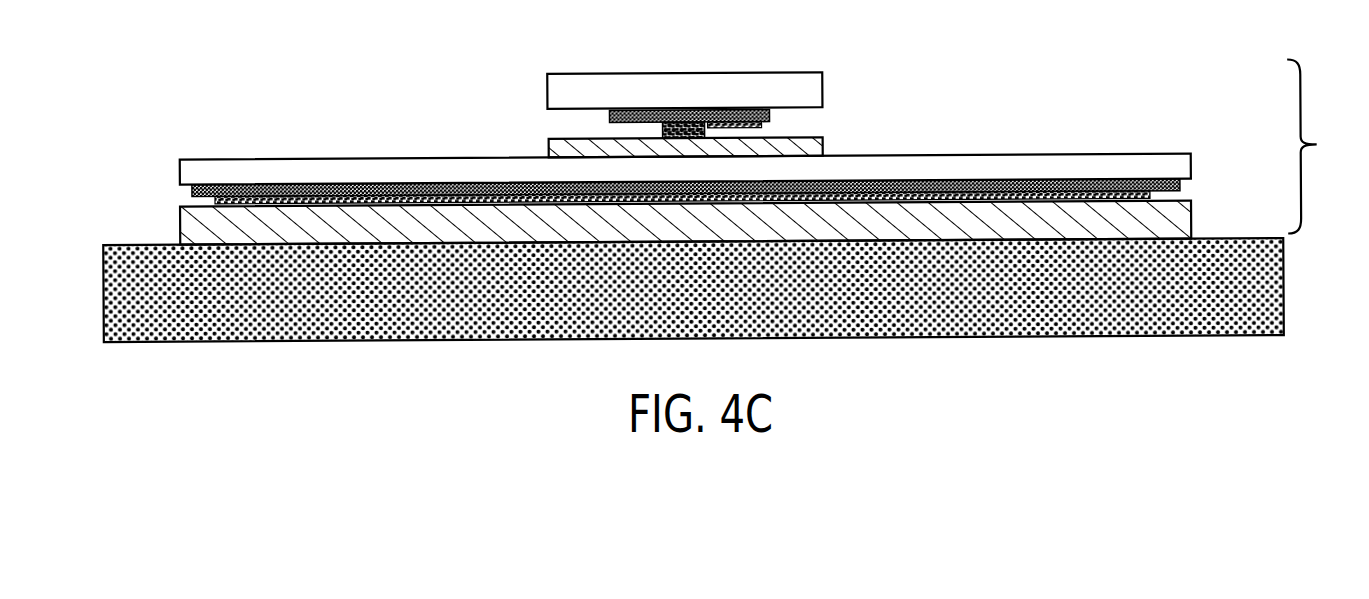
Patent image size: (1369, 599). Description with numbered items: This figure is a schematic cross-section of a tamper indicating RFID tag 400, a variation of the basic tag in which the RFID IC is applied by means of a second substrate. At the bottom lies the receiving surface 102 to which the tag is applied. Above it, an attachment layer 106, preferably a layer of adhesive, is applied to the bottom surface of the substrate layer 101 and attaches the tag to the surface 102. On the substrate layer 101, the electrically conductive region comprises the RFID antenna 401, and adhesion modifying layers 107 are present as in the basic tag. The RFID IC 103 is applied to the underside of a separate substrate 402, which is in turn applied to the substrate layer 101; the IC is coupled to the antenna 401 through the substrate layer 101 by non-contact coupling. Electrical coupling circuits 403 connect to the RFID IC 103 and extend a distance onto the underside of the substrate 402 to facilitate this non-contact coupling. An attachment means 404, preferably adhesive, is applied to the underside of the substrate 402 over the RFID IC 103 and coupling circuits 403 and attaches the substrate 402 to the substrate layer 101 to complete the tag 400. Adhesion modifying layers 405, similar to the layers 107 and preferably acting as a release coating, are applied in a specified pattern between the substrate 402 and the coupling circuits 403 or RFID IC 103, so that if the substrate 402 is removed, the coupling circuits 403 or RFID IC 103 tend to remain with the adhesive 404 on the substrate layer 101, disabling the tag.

The substrate layer 101 is at (180, 173).
The receiving surface 102 is at (200, 340).
The RFID IC 103 is at (688, 110).
The attachment layer 106 is at (180, 231).
The adhesion modifying layers 107 is at (192, 192).
The tamper indicating RFID tag 400 is at (1320, 146).
The RFID antenna 401 is at (1153, 195).
The substrate 402 is at (548, 80).
The electrical coupling circuits 403 is at (760, 123).
The attachment means 404 is at (823, 143).
The adhesion modifying layers 405 is at (610, 116).